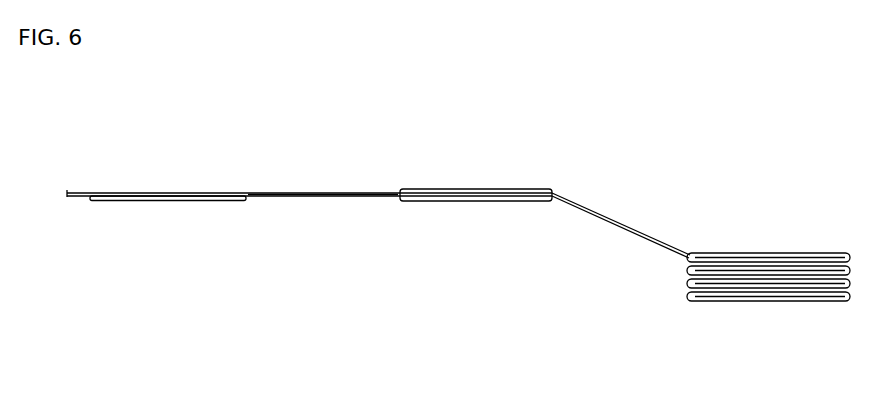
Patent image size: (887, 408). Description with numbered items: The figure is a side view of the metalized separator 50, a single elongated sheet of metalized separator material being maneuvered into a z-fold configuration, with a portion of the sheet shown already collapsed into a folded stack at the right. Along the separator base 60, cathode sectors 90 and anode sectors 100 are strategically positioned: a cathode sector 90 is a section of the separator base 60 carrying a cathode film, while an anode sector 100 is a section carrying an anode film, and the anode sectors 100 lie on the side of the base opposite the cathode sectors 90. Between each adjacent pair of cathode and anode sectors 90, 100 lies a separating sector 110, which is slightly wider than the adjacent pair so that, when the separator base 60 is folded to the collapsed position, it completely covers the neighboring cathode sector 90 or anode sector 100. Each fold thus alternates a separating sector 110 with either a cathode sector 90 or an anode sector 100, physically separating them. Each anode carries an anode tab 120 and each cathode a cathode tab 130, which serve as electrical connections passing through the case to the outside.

The metalized separator 50 is at (298, 340).
The separator base 60 is at (313, 190).
The cathode sector 90 is at (157, 205).
The anode sector 100 is at (464, 208).
The separating sector 110 is at (343, 205).
The anode tab 120 is at (525, 208).
The cathode tab 130 is at (222, 205).